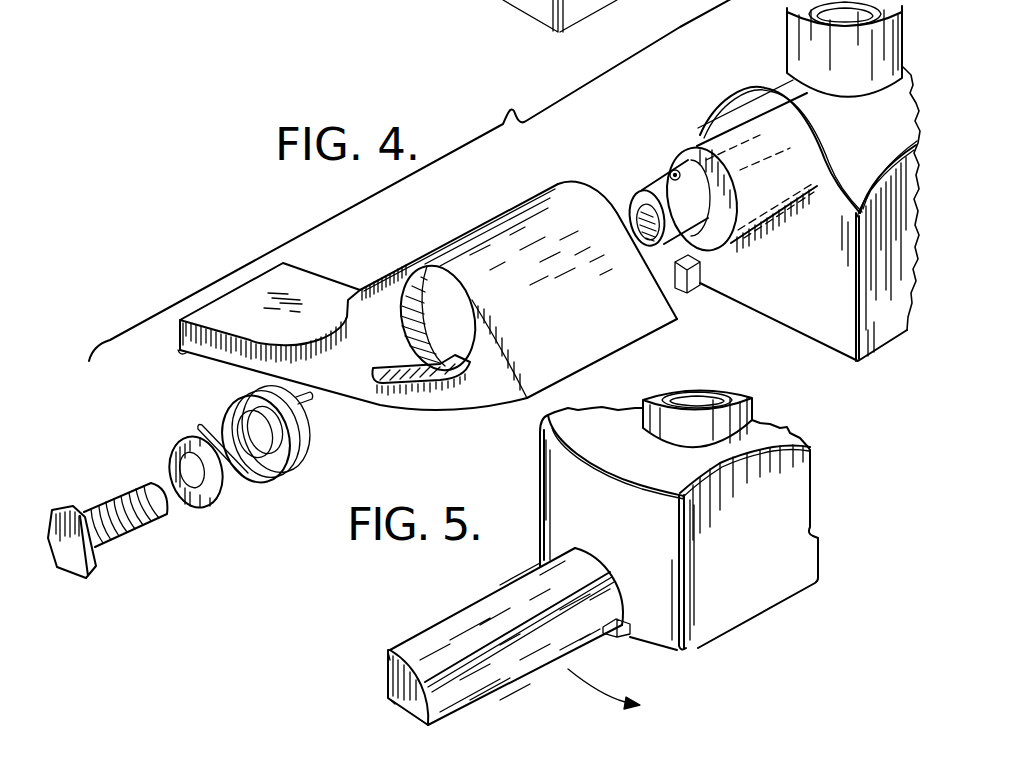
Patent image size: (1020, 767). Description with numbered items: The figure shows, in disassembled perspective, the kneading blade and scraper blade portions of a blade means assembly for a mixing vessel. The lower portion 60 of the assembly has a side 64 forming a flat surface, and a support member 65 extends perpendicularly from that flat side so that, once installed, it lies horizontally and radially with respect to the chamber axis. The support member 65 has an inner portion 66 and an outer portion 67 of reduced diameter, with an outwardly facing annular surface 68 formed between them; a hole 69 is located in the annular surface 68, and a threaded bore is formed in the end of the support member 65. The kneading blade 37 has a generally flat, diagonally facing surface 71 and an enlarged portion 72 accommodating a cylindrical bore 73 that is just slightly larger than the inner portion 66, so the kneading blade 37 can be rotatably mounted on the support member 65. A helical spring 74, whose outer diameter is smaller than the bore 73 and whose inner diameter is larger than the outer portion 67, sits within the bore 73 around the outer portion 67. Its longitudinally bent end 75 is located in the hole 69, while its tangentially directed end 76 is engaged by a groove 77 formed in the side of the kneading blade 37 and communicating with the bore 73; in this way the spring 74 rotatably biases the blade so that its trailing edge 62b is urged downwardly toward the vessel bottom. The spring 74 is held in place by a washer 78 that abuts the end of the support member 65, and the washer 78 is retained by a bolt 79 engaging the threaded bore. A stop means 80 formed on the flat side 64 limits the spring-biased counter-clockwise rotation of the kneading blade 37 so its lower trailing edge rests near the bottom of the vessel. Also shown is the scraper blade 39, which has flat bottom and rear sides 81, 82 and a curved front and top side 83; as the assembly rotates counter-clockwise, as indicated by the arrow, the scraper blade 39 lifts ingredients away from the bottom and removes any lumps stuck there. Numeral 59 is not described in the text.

In FIG. 4, the kneading blade 37 is at (332, 298).
In FIG. 5, the scraper blade 39 is at (455, 622).
In FIG. 4, the cutting edge 59 is at (379, 0).
In FIG. 4, the lower portion 60 is at (634, 224).
In FIG. 5, the lower portion 60 is at (750, 593).
In FIG. 4, the trailing edge 62b is at (185, 352).
In FIG. 4, the side 64 is at (810, 303).
In FIG. 4, the support member 65 is at (685, 147).
In FIG. 4, the inner portion 66 is at (717, 148).
In FIG. 4, the outer portion 67 is at (653, 197).
In FIG. 4, the annular surface 68 is at (670, 163).
In FIG. 4, the hole 69 is at (669, 171).
In FIG. 4, the diagonally facing surface 71 is at (490, 408).
In FIG. 4, the enlarged portion 72 is at (527, 233).
In FIG. 4, the cylindrical bore 73 is at (423, 297).
In FIG. 4, the helical spring 74 is at (296, 458).
In FIG. 4, the longitudinally bent end 75 is at (310, 405).
In FIG. 4, the tangentially directed end 76 is at (205, 424).
In FIG. 4, the groove 77 is at (393, 383).
In FIG. 4, the washer 78 is at (216, 508).
In FIG. 4, the bolt 79 is at (110, 542).
In FIG. 4, the stop means 80 is at (695, 290).
In FIG. 5, the stop means 80 is at (813, 530).
In FIG. 5, the bottom side 81 is at (403, 712).
In FIG. 5, the rear side 82 is at (387, 669).
In FIG. 5, the curved front and top side 83 is at (507, 662).